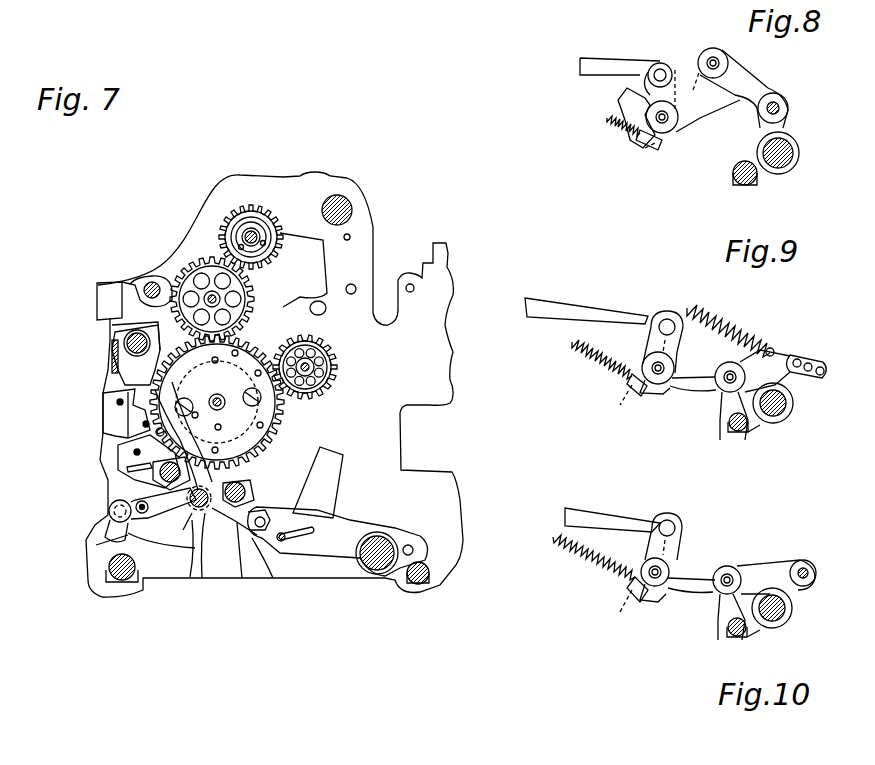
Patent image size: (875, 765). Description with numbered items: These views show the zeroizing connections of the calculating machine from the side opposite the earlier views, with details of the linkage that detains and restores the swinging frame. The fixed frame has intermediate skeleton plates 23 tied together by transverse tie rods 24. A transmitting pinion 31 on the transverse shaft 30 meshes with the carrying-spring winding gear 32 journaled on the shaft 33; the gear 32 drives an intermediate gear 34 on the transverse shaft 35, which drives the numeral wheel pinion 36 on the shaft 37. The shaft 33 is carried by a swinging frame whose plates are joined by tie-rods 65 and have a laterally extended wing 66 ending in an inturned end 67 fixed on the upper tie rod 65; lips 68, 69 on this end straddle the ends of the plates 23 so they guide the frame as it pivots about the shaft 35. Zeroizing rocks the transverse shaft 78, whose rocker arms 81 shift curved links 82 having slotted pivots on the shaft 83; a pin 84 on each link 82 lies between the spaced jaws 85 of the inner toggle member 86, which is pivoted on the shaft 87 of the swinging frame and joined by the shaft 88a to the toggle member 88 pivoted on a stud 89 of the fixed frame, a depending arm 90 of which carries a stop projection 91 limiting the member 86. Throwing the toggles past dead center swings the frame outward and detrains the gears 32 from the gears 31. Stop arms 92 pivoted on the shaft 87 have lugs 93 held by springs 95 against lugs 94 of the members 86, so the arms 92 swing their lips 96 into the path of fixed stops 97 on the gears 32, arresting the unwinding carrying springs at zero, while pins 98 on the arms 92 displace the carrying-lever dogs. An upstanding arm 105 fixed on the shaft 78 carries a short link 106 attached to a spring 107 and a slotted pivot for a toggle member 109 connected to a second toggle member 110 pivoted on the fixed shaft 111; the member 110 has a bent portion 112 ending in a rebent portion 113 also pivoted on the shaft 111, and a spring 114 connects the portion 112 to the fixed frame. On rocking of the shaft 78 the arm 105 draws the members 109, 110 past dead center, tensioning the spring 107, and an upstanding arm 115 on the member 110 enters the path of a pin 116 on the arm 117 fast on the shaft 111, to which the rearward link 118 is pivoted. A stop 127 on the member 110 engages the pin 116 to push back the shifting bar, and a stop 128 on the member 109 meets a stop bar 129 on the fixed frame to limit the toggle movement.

In FIG. 7, the intermediate skeleton plates 23 is at (432, 349).
In FIG. 7, the transverse tie rods 24 is at (110, 572).
In FIG. 7, the transverse shaft 30 is at (314, 367).
In FIG. 7, the transmitting pinion 31 is at (327, 357).
In FIG. 7, the carrying-spring winding gear 32 is at (245, 352).
In FIG. 7, the shaft 33 is at (223, 402).
In FIG. 7, the intermediate gear 34 is at (198, 275).
In FIG. 7, the transverse shaft 35 is at (183, 285).
In FIG. 7, the numeral wheel pinion 36 is at (262, 222).
In FIG. 7, the transverse shaft 37 is at (249, 230).
In FIG. 7, the transverse tie-rods 65 is at (124, 346).
In FIG. 7, the laterally extended wing 66 is at (112, 360).
In FIG. 7, the inturned upwardly extending end 67 is at (104, 388).
In FIG. 7, the lip 68 is at (127, 330).
In FIG. 7, the lip 69 is at (132, 318).
In FIG. 7, the transverse shaft 78 is at (382, 570).
In FIG. 8, the transverse shaft 78 is at (796, 157).
In FIG. 9, the transverse shaft 78 is at (788, 412).
In FIG. 10, the transverse shaft 78 is at (790, 614).
In FIG. 7, the rocker arms 81 is at (400, 545).
In FIG. 7, the curved links 82 is at (355, 527).
In FIG. 7, the transverse shaft 83 is at (292, 536).
In FIG. 7, the pin 84 is at (262, 516).
In FIG. 7, the spaced jaws 85 is at (255, 540).
In FIG. 7, the inner toggle member 86 is at (238, 522).
In FIG. 7, the shaft 87 is at (205, 518).
In FIG. 7, the toggle member 88 is at (135, 530).
In FIG. 7, the shaft 88a is at (141, 501).
In FIG. 7, the studs 89 is at (109, 513).
In FIG. 7, the depending arms 90 is at (115, 530).
In FIG. 7, the stop projections 91 is at (120, 540).
In FIG. 7, the stop arms 92 is at (152, 468).
In FIG. 7, the lugs 93 is at (200, 555).
In FIG. 7, the lugs 94 is at (199, 512).
In FIG. 7, the springs 95 is at (240, 478).
In FIG. 7, the lips 96 is at (140, 425).
In FIG. 7, the fixed stops 97 is at (244, 392).
In FIG. 7, the pins 98 is at (132, 446).
In FIG. 8, the upstanding arm 105 is at (786, 128).
In FIG. 9, the upstanding arm 105 is at (795, 402).
In FIG. 10, the upstanding arm 105 is at (790, 600).
In FIG. 9, the short link 106 is at (822, 366).
In FIG. 9, the spring 107 is at (738, 330).
In FIG. 8, the toggle member 109 is at (752, 80).
In FIG. 9, the toggle member 109 is at (770, 362).
In FIG. 10, the toggle member 109 is at (775, 565).
In FIG. 8, the toggle member 110 is at (688, 95).
In FIG. 9, the toggle member 110 is at (730, 400).
In FIG. 10, the toggle member 110 is at (703, 596).
In FIG. 8, the transverse shaft 111 is at (670, 117).
In FIG. 9, the transverse shaft 111 is at (660, 384).
In FIG. 10, the transverse shaft 111 is at (656, 587).
In FIG. 8, the bent portion 112 is at (645, 150).
In FIG. 9, the bent portion 112 is at (627, 390).
In FIG. 10, the bent portion 112 is at (627, 595).
In FIG. 8, the rebent portion 113 is at (665, 138).
In FIG. 9, the rebent portion 113 is at (668, 400).
In FIG. 10, the rebent portion 113 is at (647, 603).
In FIG. 8, the spring 114 is at (607, 125).
In FIG. 9, the spring 114 is at (580, 352).
In FIG. 10, the spring 114 is at (575, 558).
In FIG. 8, the upstanding arm 115 is at (627, 88).
In FIG. 9, the upstanding arm 115 is at (648, 345).
In FIG. 10, the upstanding arm 115 is at (642, 548).
In FIG. 8, the pin 116 is at (661, 68).
In FIG. 9, the pin 116 is at (667, 319).
In FIG. 10, the pin 116 is at (671, 521).
In FIG. 8, the arm 117 is at (637, 70).
In FIG. 9, the arm 117 is at (683, 380).
In FIG. 10, the arm 117 is at (676, 548).
In FIG. 8, the link 118 is at (620, 66).
In FIG. 9, the link 118 is at (566, 308).
In FIG. 10, the link 118 is at (583, 515).
In FIG. 8, the stop 127 is at (675, 75).
In FIG. 9, the stop 127 is at (680, 315).
In FIG. 10, the stop 127 is at (705, 563).
In FIG. 9, the stop 128 is at (744, 436).
In FIG. 10, the stop 128 is at (740, 640).
In FIG. 9, the stop bar 129 is at (752, 432).
In FIG. 10, the stop bar 129 is at (752, 633).